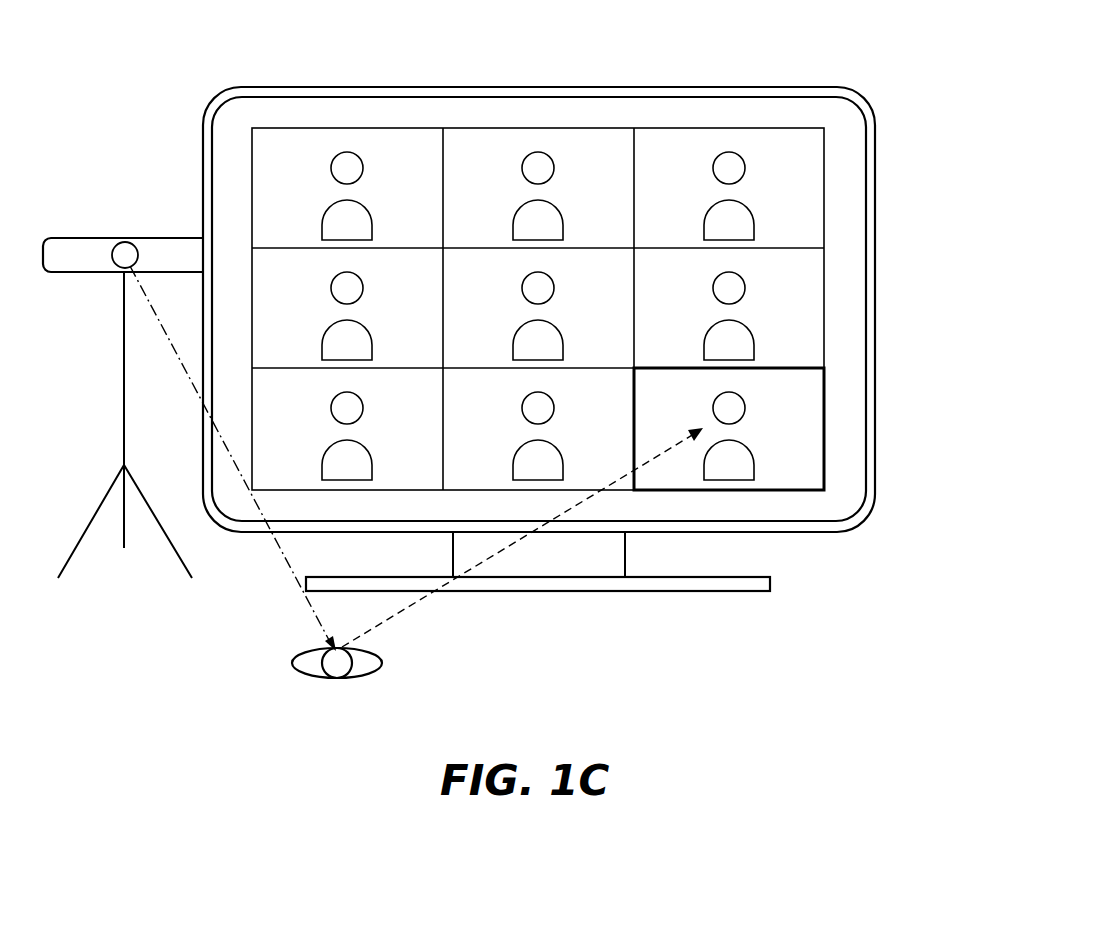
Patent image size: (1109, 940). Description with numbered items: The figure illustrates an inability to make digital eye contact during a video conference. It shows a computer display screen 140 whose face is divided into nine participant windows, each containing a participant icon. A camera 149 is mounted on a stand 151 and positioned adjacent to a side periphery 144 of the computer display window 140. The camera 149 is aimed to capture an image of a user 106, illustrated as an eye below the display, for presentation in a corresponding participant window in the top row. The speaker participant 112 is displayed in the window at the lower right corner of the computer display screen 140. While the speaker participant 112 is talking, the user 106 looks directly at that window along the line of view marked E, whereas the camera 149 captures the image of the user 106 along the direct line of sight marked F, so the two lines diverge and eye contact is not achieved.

The computer display screen 140 is at (876, 76).
The side periphery 144 is at (373, 87).
The camera 149 is at (128, 214).
The stand 151 is at (124, 394).
The user 106 is at (746, 175).
The speaker participant 112 is at (746, 415).